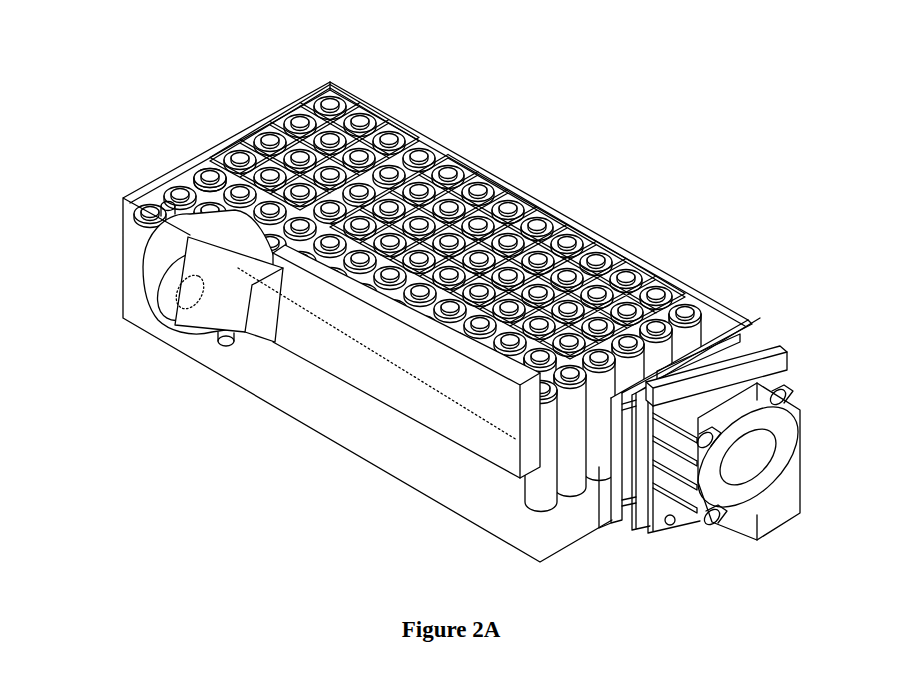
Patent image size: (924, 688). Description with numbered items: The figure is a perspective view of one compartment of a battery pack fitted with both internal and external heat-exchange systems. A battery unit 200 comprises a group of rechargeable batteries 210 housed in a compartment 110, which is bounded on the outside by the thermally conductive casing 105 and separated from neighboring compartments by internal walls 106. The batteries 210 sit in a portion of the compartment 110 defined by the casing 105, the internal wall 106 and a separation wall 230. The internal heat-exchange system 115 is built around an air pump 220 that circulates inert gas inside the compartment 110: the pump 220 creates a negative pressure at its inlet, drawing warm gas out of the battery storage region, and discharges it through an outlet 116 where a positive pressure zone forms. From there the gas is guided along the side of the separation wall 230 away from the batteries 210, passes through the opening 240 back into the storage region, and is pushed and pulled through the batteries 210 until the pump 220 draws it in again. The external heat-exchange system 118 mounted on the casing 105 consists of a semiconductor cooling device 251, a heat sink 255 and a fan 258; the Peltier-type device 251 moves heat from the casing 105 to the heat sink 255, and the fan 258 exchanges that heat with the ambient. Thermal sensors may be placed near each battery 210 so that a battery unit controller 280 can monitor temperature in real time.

The casing 105 is at (283, 104).
The internal wall 106 is at (613, 243).
The compartment 110 is at (714, 316).
The internal heat-exchange system 115 is at (131, 262).
The outlet 116 is at (262, 308).
The external heat-exchange system 118 is at (789, 347).
The battery unit 200 is at (672, 98).
The rechargeable batteries 210 is at (470, 181).
The air pump 220 is at (190, 218).
The separation wall 230 is at (201, 175).
The opening 240 is at (589, 488).
The semiconductor cooling device 251 is at (718, 372).
The heat sink 255 is at (768, 378).
The fan 258 is at (790, 463).
The battery unit controller 280 is at (421, 408).